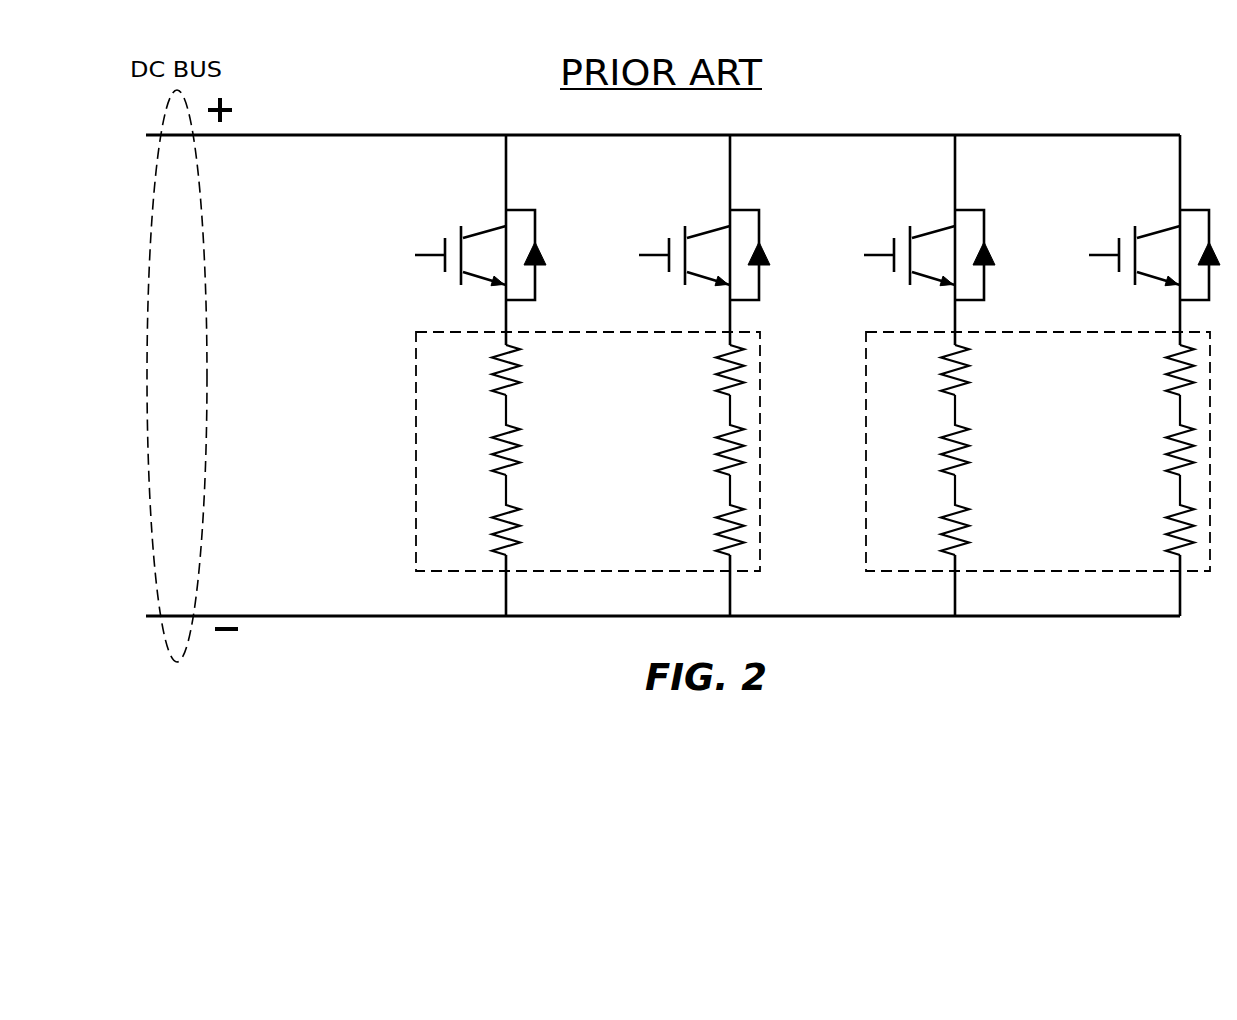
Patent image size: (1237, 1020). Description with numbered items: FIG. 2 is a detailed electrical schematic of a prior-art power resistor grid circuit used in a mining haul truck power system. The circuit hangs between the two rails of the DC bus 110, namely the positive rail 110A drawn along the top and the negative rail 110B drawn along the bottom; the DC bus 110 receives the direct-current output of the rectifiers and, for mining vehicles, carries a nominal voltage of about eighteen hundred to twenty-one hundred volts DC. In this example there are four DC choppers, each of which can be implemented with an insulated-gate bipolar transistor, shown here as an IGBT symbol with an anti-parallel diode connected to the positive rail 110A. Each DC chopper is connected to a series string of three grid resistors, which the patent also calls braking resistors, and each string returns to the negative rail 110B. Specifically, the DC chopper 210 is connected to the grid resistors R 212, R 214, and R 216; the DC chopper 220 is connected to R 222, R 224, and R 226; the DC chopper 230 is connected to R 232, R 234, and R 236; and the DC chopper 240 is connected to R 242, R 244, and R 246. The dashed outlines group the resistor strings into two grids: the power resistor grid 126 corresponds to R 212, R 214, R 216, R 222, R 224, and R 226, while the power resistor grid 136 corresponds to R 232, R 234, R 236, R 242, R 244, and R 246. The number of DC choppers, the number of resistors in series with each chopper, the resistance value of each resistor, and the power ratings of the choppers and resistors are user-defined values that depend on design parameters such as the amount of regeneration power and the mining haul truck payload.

The DC bus 110 is at (177, 390).
The positive rail 110A is at (300, 134).
The negative rail 110B is at (300, 614).
The DC chopper 210 is at (453, 208).
The DC chopper 220 is at (677, 208).
The DC chopper 230 is at (902, 208).
The DC chopper 240 is at (1127, 208).
The grid resistor 212 is at (481, 370).
The grid resistor 214 is at (481, 435).
The grid resistor 216 is at (481, 515).
The grid resistor 222 is at (705, 370).
The grid resistor 224 is at (705, 435).
The grid resistor 226 is at (705, 515).
The grid resistor 232 is at (930, 370).
The grid resistor 234 is at (930, 435).
The grid resistor 236 is at (930, 515).
The grid resistor 242 is at (1155, 370).
The grid resistor 244 is at (1155, 435).
The grid resistor 246 is at (1155, 515).
The power resistor grid 126 is at (588, 465).
The power resistor grid 136 is at (1038, 465).